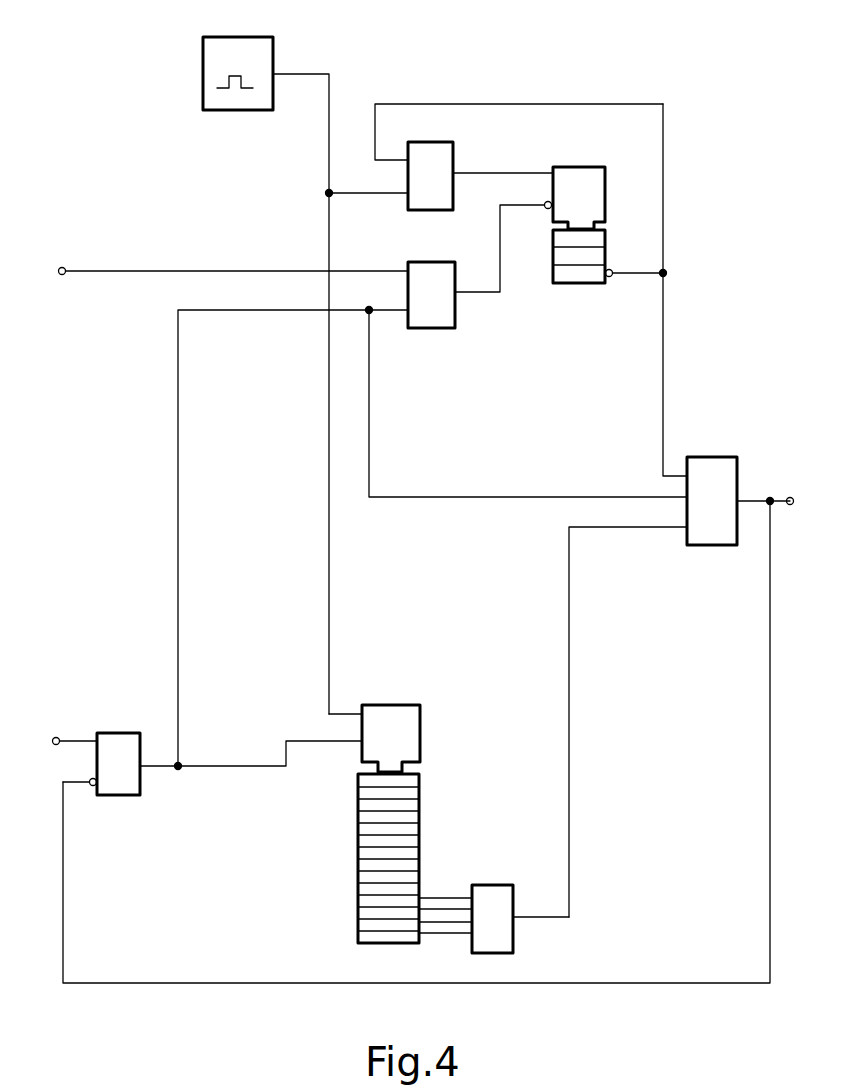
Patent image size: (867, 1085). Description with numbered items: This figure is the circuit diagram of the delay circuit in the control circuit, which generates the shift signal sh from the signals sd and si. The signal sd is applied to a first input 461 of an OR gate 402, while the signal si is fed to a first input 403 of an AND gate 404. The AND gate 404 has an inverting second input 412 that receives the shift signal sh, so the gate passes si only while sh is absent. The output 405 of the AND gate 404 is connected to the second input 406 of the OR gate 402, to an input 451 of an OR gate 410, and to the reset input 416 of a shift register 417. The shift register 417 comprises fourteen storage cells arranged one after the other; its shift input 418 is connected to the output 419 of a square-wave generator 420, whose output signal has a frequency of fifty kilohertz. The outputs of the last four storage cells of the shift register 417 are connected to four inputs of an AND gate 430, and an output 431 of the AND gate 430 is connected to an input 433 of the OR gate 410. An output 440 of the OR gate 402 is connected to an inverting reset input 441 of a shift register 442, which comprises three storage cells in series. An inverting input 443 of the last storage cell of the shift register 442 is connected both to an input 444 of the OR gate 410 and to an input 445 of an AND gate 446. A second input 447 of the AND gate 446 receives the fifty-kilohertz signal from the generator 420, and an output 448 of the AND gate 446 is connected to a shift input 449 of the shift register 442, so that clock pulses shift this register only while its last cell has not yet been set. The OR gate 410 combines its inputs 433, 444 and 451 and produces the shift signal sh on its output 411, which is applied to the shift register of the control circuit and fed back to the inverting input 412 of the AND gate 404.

The square-wave generator 420 is at (250, 36).
The output of square-wave generator 419 is at (280, 86).
The input of AND gate 446 445 is at (393, 152).
The AND gate 446 is at (446, 132).
The second input of AND gate 446 447 is at (394, 200).
The output of AND gate 446 448 is at (458, 172).
The shift input of shift register 442 449 is at (548, 170).
The shift register 442 is at (603, 228).
The inverting reset input of shift register 442 441 is at (540, 216).
The inverting input of last storage cell 443 is at (610, 280).
The first input of OR gate 402 461 is at (404, 270).
The OR gate 402 is at (455, 328).
The second input of OR gate 402 406 is at (402, 322).
The output of OR gate 402 440 is at (457, 296).
The OR gate 410 is at (715, 455).
The input of OR gate 410 444 is at (684, 470).
The input of OR gate 410 451 is at (683, 500).
The input of OR gate 410 433 is at (683, 527).
The output of OR gate 410 411 is at (737, 505).
The AND gate 404 is at (127, 798).
The first input of AND gate 404 403 is at (95, 732).
The inverting second input of AND gate 404 412 is at (91, 787).
The output of AND gate 404 405 is at (142, 768).
The shift input of shift register 417 418 is at (357, 708).
The reset input of shift register 417 416 is at (360, 746).
The shift register 417 is at (420, 767).
The AND gate 430 is at (494, 886).
The output of AND gate 430 431 is at (520, 924).